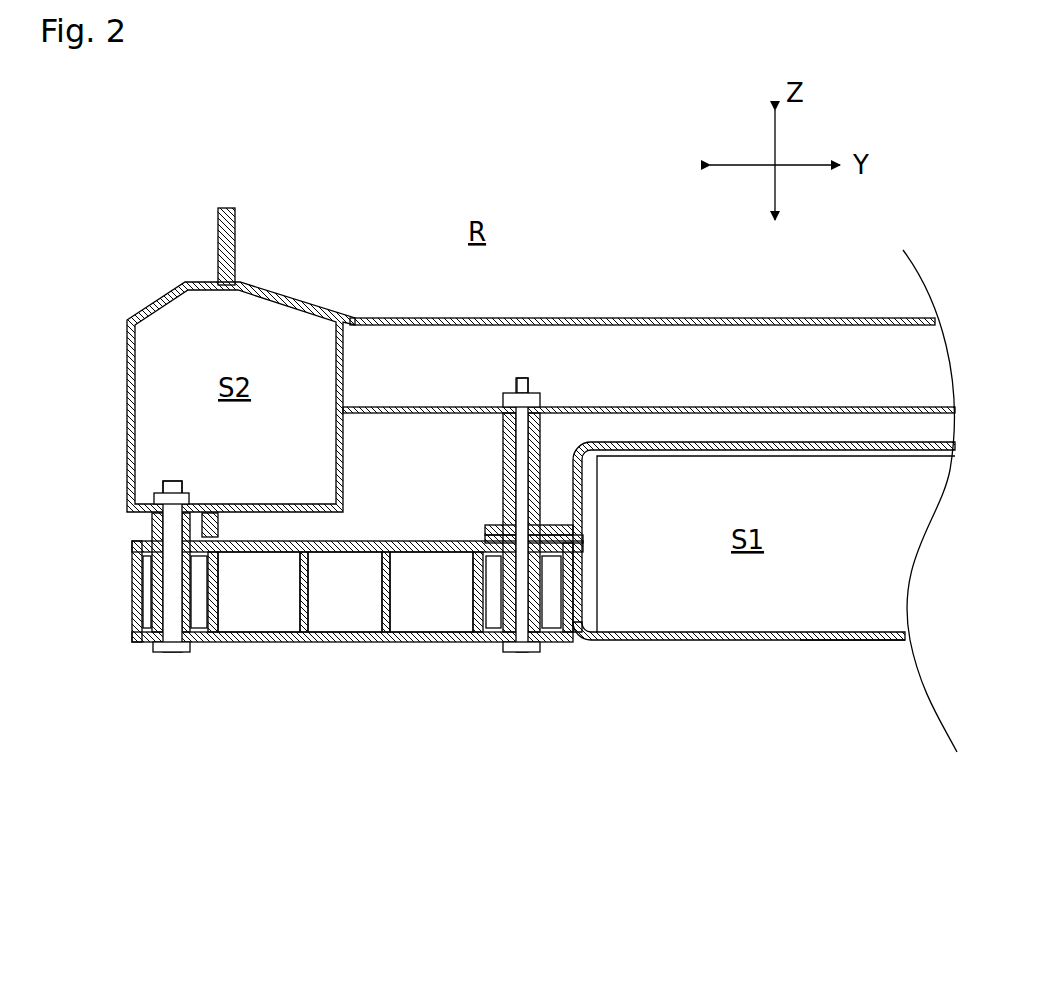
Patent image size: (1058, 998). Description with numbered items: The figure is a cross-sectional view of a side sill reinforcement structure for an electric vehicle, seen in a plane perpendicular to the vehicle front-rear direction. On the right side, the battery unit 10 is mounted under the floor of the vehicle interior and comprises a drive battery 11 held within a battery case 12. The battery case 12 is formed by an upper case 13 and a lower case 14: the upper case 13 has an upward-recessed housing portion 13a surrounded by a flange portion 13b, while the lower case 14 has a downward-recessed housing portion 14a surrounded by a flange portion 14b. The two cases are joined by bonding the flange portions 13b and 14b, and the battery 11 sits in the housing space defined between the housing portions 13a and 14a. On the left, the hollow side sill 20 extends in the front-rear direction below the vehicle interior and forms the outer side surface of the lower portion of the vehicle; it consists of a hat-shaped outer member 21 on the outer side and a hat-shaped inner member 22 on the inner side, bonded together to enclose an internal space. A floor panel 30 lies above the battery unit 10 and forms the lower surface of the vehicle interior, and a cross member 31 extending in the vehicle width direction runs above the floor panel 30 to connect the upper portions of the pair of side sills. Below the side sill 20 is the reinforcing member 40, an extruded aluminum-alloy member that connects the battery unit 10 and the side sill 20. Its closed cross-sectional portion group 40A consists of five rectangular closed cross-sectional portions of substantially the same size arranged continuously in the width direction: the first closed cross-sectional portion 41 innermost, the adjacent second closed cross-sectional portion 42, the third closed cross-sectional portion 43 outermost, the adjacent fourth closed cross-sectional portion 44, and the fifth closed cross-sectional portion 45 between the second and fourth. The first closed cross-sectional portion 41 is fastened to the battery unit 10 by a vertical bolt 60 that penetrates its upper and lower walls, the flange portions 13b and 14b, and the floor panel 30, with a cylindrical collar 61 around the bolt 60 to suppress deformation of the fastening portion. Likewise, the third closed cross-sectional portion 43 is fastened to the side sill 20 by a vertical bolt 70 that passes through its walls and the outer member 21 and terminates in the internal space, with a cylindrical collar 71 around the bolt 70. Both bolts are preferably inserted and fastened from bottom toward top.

The battery unit 10 is at (878, 543).
The drive battery 11 is at (870, 590).
The battery case 12 is at (840, 641).
The upper case 13 is at (720, 425).
The housing portion 13a is at (708, 443).
The flange portion 13b is at (548, 535).
The lower case 14 is at (764, 650).
The housing portion 14a is at (688, 641).
The flange portion 14b is at (642, 641).
The side sill 20 is at (241, 298).
The outer member 21 is at (183, 284).
The inner member 22 is at (250, 288).
The floor panel 30 is at (398, 406).
The cross member 31 is at (375, 316).
The reinforcing member 40 is at (348, 689).
The closed cross-sectional portion group 40A is at (348, 656).
The first closed cross-sectional portion 41 is at (551, 616).
The second closed cross-sectional portion 42 is at (431, 592).
The third closed cross-sectional portion 43 is at (137, 626).
The fourth closed cross-sectional portion 44 is at (259, 592).
The fifth closed cross-sectional portion 45 is at (345, 592).
The bolt 60 is at (515, 653).
The cylindrical collar 61 is at (502, 470).
The bolt 70 is at (168, 653).
The cylindrical collar 71 is at (152, 530).